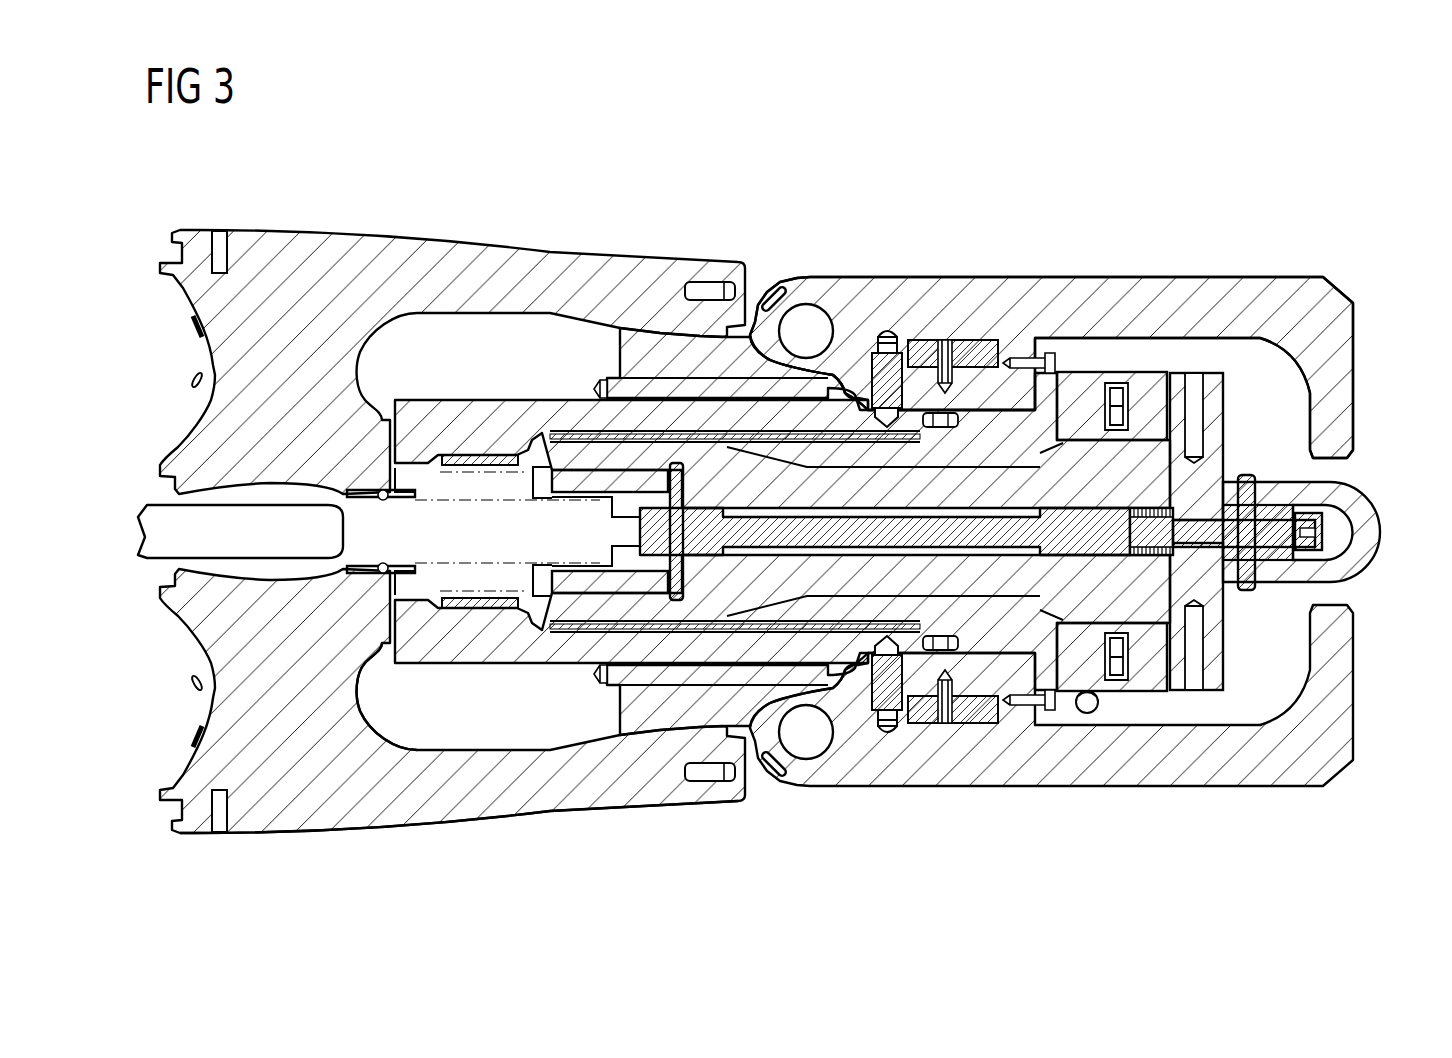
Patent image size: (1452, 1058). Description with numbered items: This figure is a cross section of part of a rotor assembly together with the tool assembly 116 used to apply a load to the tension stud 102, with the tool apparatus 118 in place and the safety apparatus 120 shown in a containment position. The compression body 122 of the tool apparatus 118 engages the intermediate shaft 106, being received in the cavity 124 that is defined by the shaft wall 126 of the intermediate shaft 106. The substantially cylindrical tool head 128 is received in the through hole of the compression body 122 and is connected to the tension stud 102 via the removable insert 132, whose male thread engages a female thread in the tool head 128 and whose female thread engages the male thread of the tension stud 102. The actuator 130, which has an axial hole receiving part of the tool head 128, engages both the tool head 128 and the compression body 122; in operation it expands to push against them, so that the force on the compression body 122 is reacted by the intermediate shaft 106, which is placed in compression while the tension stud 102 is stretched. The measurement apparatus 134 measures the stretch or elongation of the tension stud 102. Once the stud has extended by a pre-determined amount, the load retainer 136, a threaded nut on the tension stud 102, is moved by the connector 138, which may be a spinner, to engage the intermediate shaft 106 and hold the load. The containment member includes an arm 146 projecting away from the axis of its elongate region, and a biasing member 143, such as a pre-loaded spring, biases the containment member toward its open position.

The tension stud 102 is at (470, 495).
The intermediate shaft 106 is at (283, 232).
The tool assembly 116 is at (1190, 192).
The tool apparatus 118 is at (1247, 688).
The safety apparatus 120 is at (950, 276).
The compression body 122 is at (567, 663).
The cavity 124 is at (378, 722).
The shaft wall 126 is at (430, 818).
The tool head 128 is at (1210, 380).
The actuator 130 is at (1118, 693).
The removable insert 132 is at (628, 467).
The measurement apparatus 134 is at (1152, 508).
The load retainer 136 is at (418, 462).
The connector 138 is at (488, 603).
The biasing member 143 is at (888, 723).
The arm 146 is at (1355, 352).